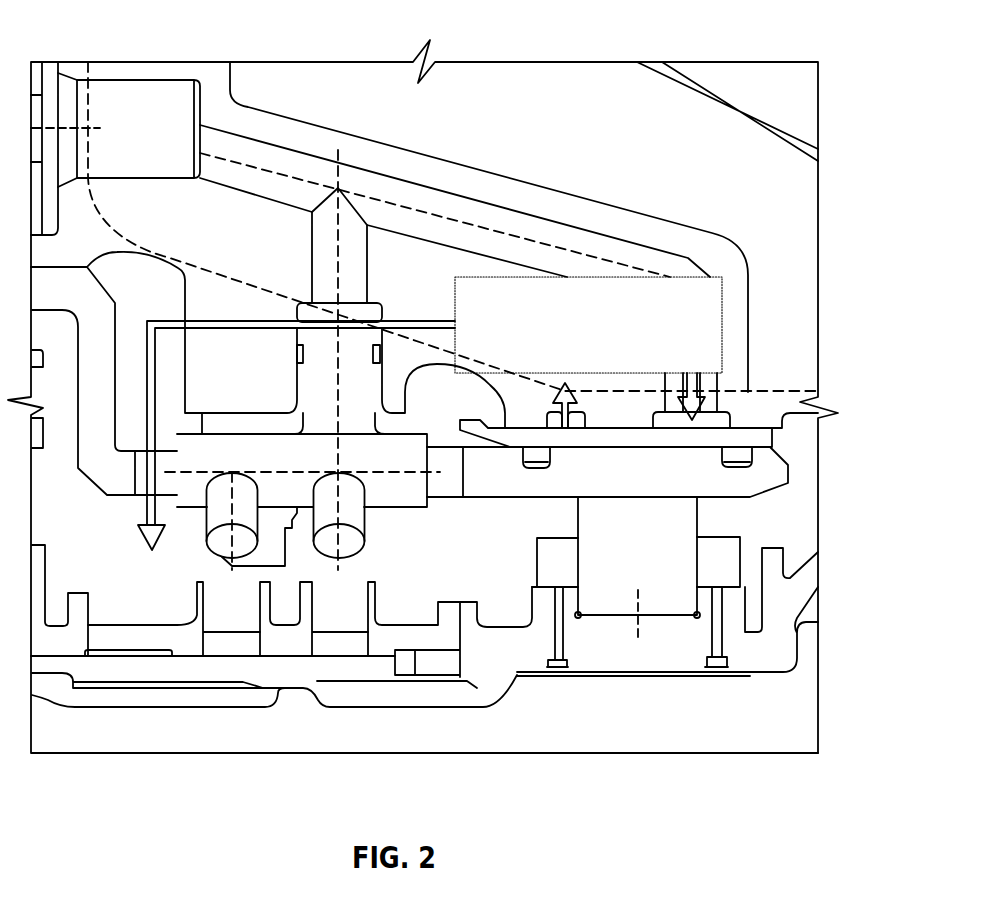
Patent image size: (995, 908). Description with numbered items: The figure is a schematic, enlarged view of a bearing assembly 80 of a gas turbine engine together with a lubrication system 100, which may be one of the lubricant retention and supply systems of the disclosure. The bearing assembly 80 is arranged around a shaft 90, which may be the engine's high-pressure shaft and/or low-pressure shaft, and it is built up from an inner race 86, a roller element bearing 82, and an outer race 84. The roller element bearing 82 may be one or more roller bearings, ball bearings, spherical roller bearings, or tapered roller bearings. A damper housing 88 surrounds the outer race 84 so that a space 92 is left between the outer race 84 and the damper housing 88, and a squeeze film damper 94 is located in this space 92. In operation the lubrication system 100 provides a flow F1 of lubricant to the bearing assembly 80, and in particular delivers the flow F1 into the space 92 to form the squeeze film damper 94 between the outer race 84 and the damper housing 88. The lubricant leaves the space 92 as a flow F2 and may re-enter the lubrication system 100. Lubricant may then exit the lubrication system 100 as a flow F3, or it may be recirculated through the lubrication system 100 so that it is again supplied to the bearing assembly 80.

The lubrication system 100 is at (728, 314).
The damper housing 88 is at (730, 428).
The outer race 84 is at (770, 473).
The roller element bearing 82 is at (683, 553).
The bearing assembly 80 is at (523, 556).
The squeeze film damper 94 is at (563, 447).
The space 92 is at (710, 447).
The shaft 90 is at (590, 730).
The inner race 86 is at (673, 652).
The flow of lubricant F1 is at (727, 437).
The flow of lubricant F2 is at (563, 382).
The flow of lubricant F3 is at (200, 321).